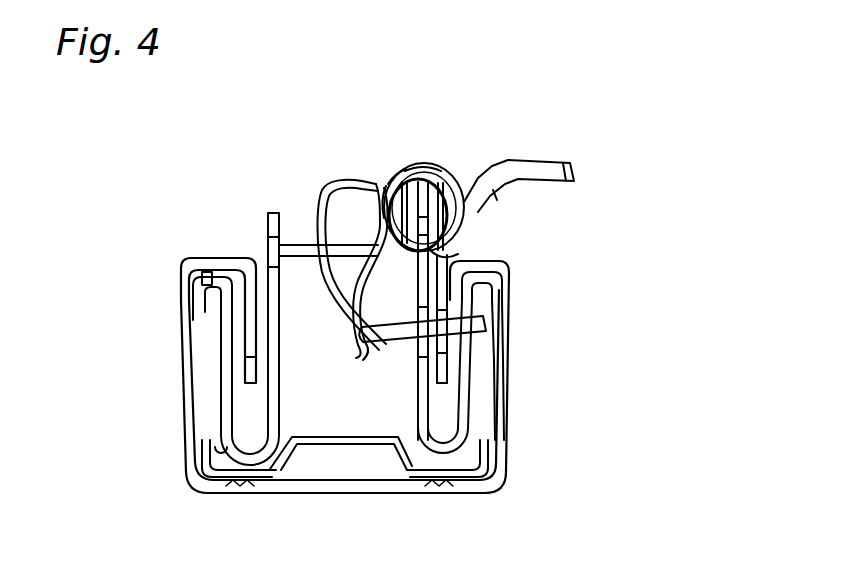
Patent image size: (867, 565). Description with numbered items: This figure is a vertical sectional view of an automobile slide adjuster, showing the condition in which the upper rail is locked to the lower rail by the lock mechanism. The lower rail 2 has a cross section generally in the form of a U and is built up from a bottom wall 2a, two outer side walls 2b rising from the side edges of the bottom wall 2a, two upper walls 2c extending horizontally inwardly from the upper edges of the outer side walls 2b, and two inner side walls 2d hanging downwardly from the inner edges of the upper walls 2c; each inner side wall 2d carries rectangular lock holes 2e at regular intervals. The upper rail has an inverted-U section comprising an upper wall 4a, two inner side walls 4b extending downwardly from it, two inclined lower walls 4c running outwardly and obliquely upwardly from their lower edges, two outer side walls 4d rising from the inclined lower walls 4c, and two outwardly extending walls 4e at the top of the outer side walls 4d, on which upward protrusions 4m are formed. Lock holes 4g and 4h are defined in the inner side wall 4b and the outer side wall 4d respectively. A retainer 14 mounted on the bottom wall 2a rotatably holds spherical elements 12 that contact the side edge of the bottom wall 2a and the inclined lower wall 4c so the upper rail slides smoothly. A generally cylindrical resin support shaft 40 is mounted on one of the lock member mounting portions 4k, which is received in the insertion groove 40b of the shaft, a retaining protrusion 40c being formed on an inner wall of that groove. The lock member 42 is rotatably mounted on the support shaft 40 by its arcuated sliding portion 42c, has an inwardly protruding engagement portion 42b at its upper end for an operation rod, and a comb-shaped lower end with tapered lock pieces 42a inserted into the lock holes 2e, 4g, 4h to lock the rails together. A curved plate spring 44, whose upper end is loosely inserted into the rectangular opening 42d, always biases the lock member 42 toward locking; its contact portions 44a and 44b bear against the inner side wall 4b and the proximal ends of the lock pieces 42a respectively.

The lower rail 2 is at (367, 369).
The bottom wall 2a is at (283, 487).
The outer side walls 2b is at (187, 398).
The upper walls 2c is at (213, 257).
The inner side walls 2d is at (246, 262).
The lock holes 2e is at (467, 365).
The upper wall 4a is at (270, 238).
The inner side walls 4b is at (418, 380).
The inclined lower walls 4c is at (453, 443).
The outer side walls 4d is at (467, 393).
The outwardly extending walls 4e is at (490, 294).
The lock holes 4g is at (422, 350).
The lock holes 4h is at (468, 349).
The lock member mounting portions 4k is at (262, 255).
The upward protrusions 4m is at (212, 282).
The spherical elements 12 is at (480, 478).
The retainer 14 is at (404, 464).
The support shaft 40 is at (466, 224).
The insertion groove 40b is at (440, 210).
The retaining protrusion 40c is at (405, 232).
The lock member 42 is at (520, 160).
The lock pieces 42a is at (490, 320).
The engagement portion 42b is at (578, 165).
The sliding portion 42c is at (405, 170).
The rectangular opening 42d is at (423, 170).
The plate spring 44 is at (303, 245).
The contact portion 44a is at (452, 258).
The contact portion 44b is at (360, 354).